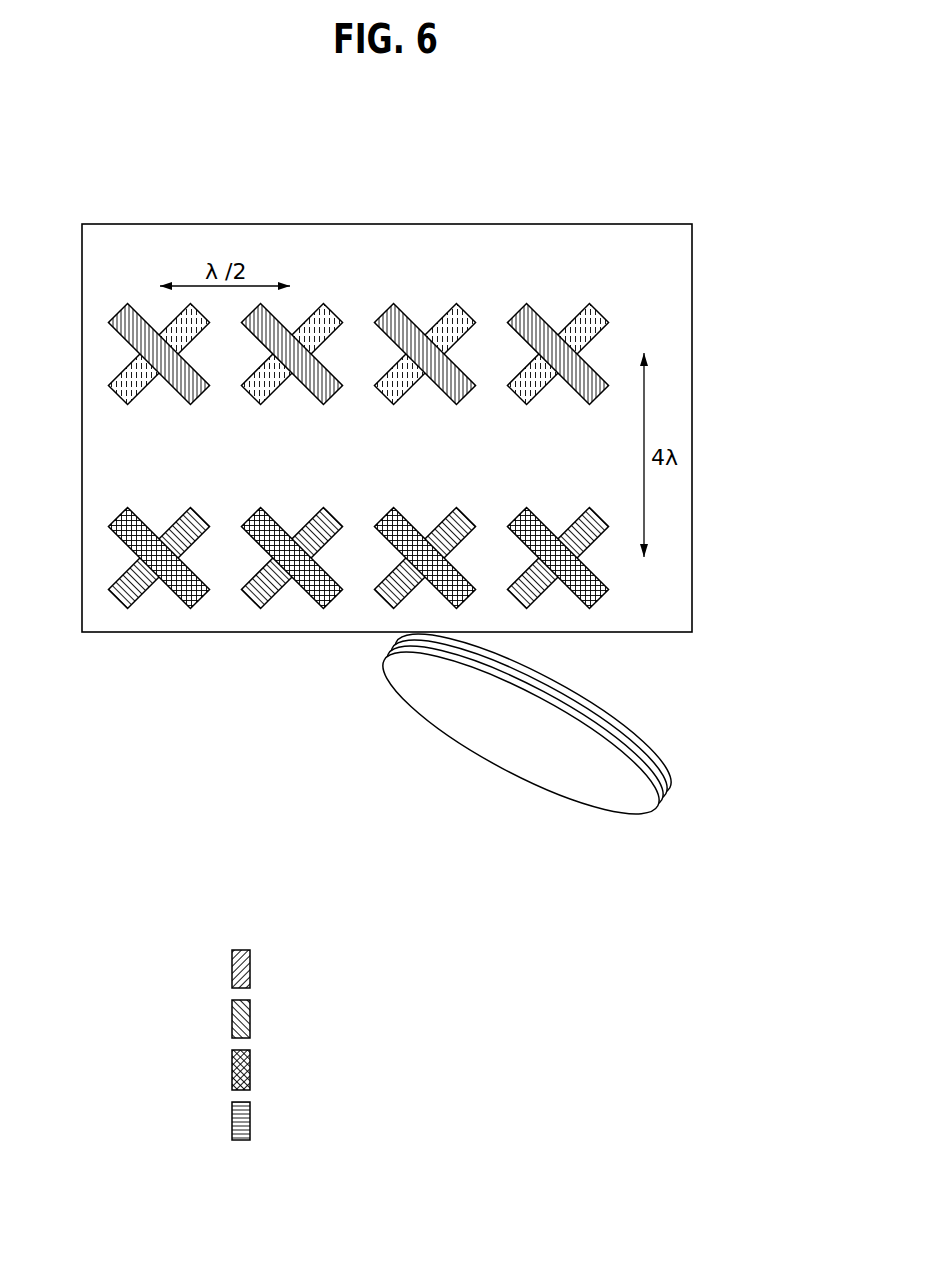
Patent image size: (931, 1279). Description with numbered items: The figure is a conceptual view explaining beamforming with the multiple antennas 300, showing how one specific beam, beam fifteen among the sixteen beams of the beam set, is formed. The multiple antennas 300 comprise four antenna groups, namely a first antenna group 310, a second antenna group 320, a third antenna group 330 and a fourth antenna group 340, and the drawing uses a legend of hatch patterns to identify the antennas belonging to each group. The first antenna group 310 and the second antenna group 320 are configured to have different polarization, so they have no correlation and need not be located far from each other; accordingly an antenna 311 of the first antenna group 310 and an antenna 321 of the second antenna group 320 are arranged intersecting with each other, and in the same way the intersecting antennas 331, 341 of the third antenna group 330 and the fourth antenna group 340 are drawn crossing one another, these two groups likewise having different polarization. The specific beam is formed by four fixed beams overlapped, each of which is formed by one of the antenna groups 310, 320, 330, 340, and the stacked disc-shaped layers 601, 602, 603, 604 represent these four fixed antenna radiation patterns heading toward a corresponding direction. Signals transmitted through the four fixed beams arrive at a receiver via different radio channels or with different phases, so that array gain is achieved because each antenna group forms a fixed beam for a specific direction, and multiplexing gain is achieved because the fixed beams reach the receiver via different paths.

The multiple antennas 300 is at (693, 268).
The antenna of the first antenna group 311 is at (385, 302).
The antenna of the second antenna group 321 is at (455, 302).
The antenna element of antenna group 2 331 is at (385, 507).
The antenna element of antenna group 3 341 is at (455, 507).
The first antenna group 310 is at (505, 966).
The second antenna group 320 is at (505, 1016).
The third antenna group 330 is at (505, 1067).
The fourth antenna group 340 is at (505, 1118).
The first layer of stacked lens 601 is at (577, 806).
The second layer of stacked lens 602 is at (657, 763).
The third layer of stacked lens 603 is at (637, 739).
The fourth layer of stacked lens 604 is at (618, 715).